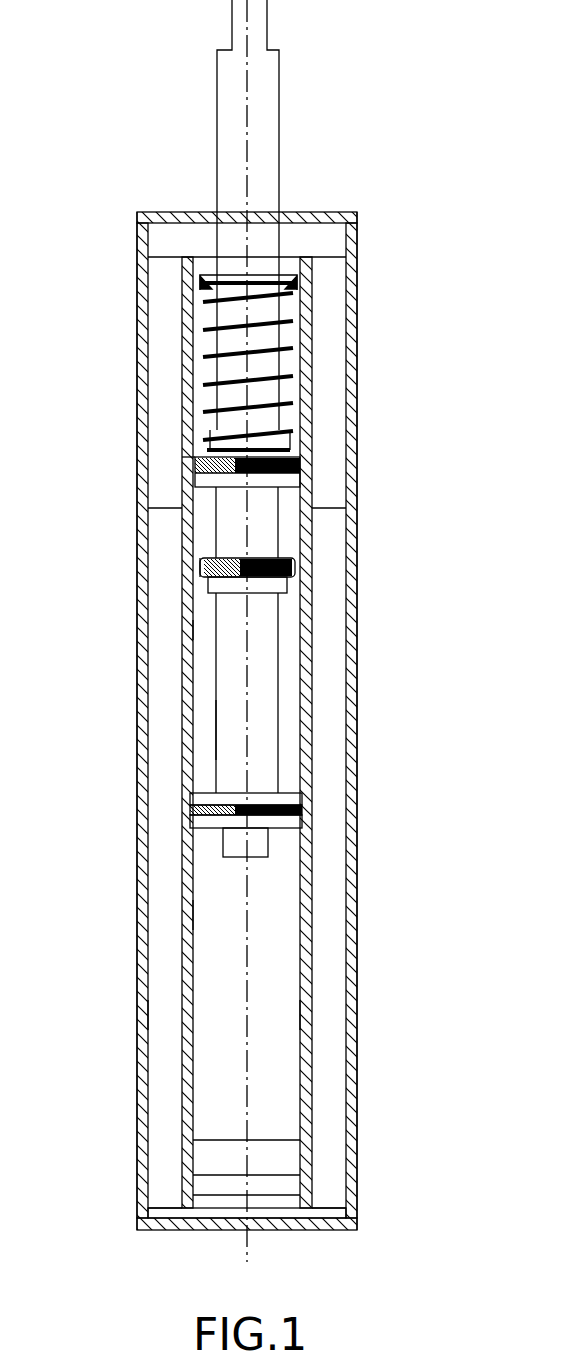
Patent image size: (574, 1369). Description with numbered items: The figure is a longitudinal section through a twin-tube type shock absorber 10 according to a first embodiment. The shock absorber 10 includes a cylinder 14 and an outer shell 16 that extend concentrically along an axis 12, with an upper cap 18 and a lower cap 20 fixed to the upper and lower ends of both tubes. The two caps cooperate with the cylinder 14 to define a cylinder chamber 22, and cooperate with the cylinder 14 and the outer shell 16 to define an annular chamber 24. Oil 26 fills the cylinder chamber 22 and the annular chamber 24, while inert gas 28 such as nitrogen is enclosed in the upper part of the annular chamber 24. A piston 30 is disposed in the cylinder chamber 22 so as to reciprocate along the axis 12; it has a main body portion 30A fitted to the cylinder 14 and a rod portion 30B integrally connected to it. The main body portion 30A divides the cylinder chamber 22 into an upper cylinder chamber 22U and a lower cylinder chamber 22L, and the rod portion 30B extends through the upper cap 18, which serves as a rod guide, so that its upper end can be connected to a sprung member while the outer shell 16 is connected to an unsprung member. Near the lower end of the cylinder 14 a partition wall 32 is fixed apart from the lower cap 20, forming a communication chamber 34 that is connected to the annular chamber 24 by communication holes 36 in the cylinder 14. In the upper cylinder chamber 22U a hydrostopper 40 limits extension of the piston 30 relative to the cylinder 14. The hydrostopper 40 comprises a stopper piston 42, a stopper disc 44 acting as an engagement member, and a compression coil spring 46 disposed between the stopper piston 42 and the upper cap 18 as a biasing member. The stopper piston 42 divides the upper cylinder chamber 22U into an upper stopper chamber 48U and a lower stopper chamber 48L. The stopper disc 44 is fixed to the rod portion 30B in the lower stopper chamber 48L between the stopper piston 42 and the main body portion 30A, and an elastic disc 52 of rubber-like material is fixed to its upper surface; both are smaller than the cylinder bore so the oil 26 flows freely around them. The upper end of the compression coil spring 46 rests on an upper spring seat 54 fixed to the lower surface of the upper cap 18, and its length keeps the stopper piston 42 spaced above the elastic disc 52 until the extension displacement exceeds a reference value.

The shock absorber 10 is at (142, 182).
The axis 12 is at (252, 108).
The cylinder 14 is at (313, 713).
The outer shell 16 is at (137, 695).
The upper cap 18 is at (322, 233).
The lower cap 20 is at (279, 1225).
The cylinder chamber 22 is at (300, 912).
The upper cylinder chamber 22U is at (200, 628).
The lower cylinder chamber 22L is at (295, 1012).
The annular chamber 24 is at (160, 1012).
The oil 26 is at (192, 918).
The inert gas 28 is at (157, 348).
The piston 30 is at (280, 645).
The main body portion 30A is at (292, 798).
The rod portion 30B is at (230, 760).
The partition wall 32 is at (205, 1143).
The communication chamber 34 is at (212, 1185).
The communication holes 36 is at (183, 1183).
The hydrostopper 40 is at (313, 462).
The stopper piston 42 is at (178, 465).
The stopper disc 44 is at (290, 592).
The compression coil spring 46 is at (292, 318).
The upper stopper chamber 48U is at (292, 363).
The lower stopper chamber 48L is at (288, 526).
The elastic disc 52 is at (207, 568).
The upper spring seat 54 is at (200, 283).